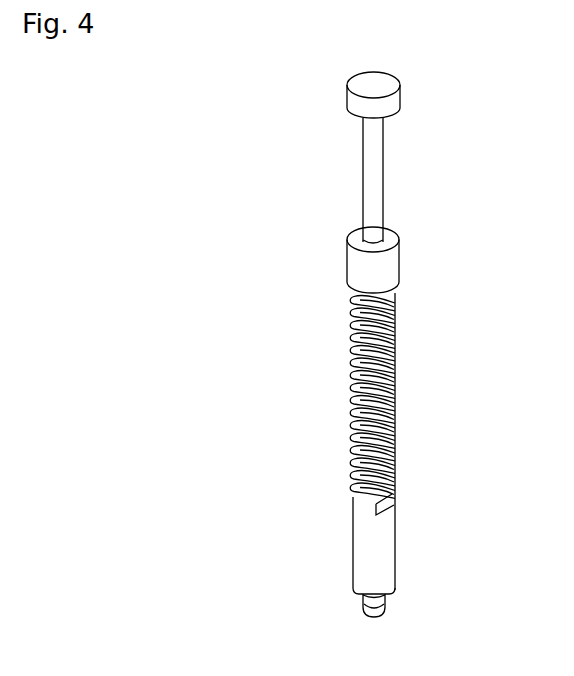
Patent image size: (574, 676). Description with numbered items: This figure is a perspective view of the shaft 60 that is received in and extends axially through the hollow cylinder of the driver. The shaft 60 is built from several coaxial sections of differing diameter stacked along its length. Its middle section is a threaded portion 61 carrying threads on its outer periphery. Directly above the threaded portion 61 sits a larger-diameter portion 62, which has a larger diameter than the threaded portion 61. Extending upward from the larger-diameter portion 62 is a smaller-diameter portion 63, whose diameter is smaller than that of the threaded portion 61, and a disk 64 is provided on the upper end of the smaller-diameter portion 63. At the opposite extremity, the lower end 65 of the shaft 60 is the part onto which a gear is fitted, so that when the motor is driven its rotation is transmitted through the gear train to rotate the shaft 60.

The shaft 60 is at (476, 164).
The threaded portion 61 is at (394, 387).
The larger-diameter portion 62 is at (392, 270).
The smaller-diameter portion 63 is at (363, 171).
The disk 64 is at (385, 80).
The lower end 65 is at (364, 600).